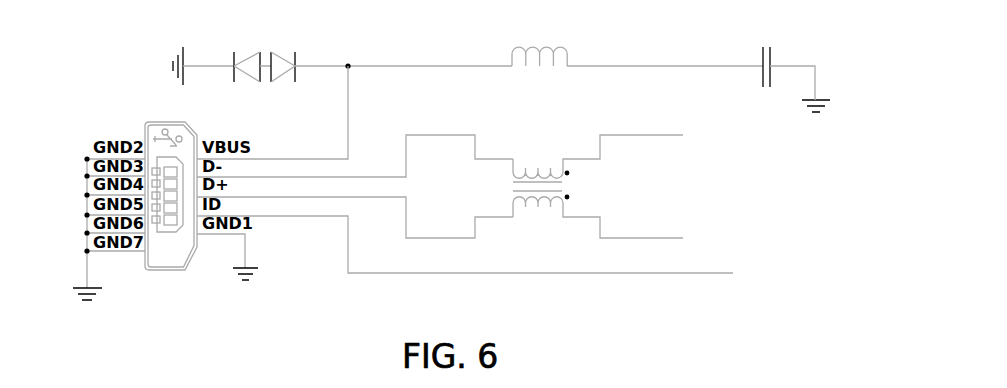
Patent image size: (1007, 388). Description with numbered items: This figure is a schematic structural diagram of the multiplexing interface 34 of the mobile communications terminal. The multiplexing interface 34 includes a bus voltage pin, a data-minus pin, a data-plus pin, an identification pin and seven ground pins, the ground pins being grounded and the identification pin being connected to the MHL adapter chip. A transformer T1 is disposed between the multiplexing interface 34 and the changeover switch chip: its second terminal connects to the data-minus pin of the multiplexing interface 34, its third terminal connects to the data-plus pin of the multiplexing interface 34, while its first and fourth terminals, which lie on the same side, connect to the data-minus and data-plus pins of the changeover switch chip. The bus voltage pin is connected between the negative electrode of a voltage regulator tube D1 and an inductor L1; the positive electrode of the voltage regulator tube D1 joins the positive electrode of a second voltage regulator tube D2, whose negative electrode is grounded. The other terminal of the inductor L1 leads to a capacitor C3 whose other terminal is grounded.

The multiplexing interface 34 is at (168, 122).
The voltage regulator tube D1 is at (391, 57).
The voltage regulator tube D2 is at (246, 57).
The inductor L1 is at (637, 49).
The capacitor C3 is at (796, 67).
The transformer T1 is at (594, 187).